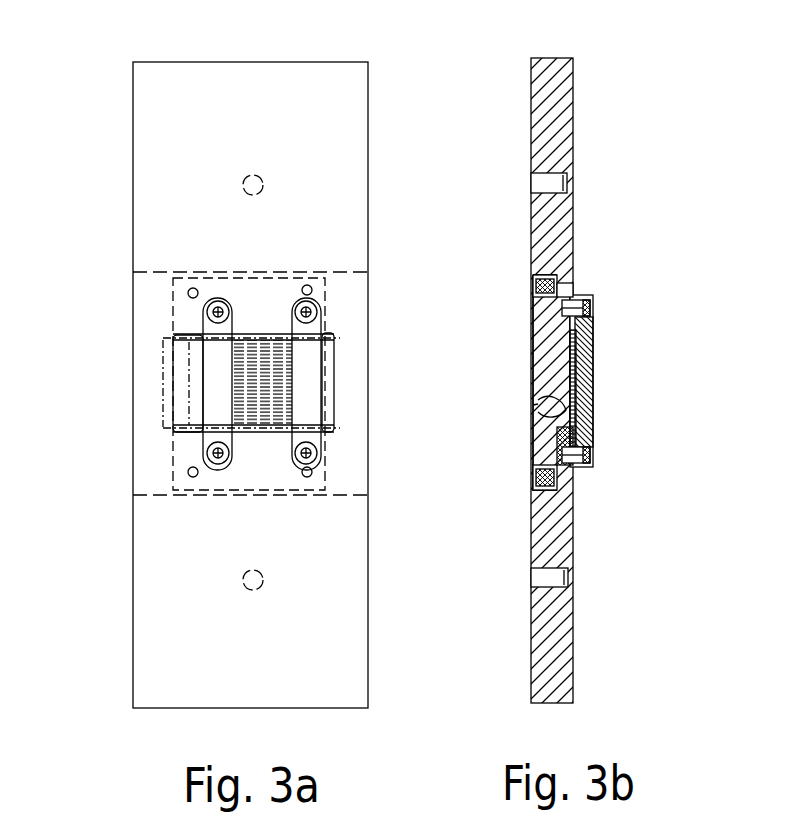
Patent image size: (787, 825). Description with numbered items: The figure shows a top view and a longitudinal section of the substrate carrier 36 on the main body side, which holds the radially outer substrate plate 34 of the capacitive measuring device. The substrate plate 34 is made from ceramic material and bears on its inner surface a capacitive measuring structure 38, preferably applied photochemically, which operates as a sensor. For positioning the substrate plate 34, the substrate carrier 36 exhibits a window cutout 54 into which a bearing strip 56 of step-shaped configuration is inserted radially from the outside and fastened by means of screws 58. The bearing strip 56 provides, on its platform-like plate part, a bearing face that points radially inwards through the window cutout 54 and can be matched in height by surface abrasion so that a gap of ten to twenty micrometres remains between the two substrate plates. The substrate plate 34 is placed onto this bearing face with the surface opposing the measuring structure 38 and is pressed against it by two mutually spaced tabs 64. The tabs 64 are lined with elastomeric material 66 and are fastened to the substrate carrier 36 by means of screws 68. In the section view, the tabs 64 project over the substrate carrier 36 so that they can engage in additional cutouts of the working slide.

In FIG. 3a, the substrate plate 34 is at (330, 342).
In FIG. 3b, the substrate plate 34 is at (595, 342).
In FIG. 3a, the substrate carrier 36 is at (330, 217).
In FIG. 3b, the substrate carrier 36 is at (531, 133).
In FIG. 3a, the capacitive measuring structure 38 is at (257, 405).
In FIG. 3a, the window cutout 54 is at (320, 429).
In FIG. 3b, the window cutout 54 is at (535, 402).
In FIG. 3b, the bearing strip 56 is at (550, 357).
In FIG. 3b, the screws 58 is at (535, 280).
In FIG. 3a, the tabs 64 is at (305, 378).
In FIG. 3b, the tabs 64 is at (595, 377).
In FIG. 3b, the elastomeric material 66 is at (595, 400).
In FIG. 3a, the screws 68 is at (218, 300).
In FIG. 3b, the screws 68 is at (597, 302).